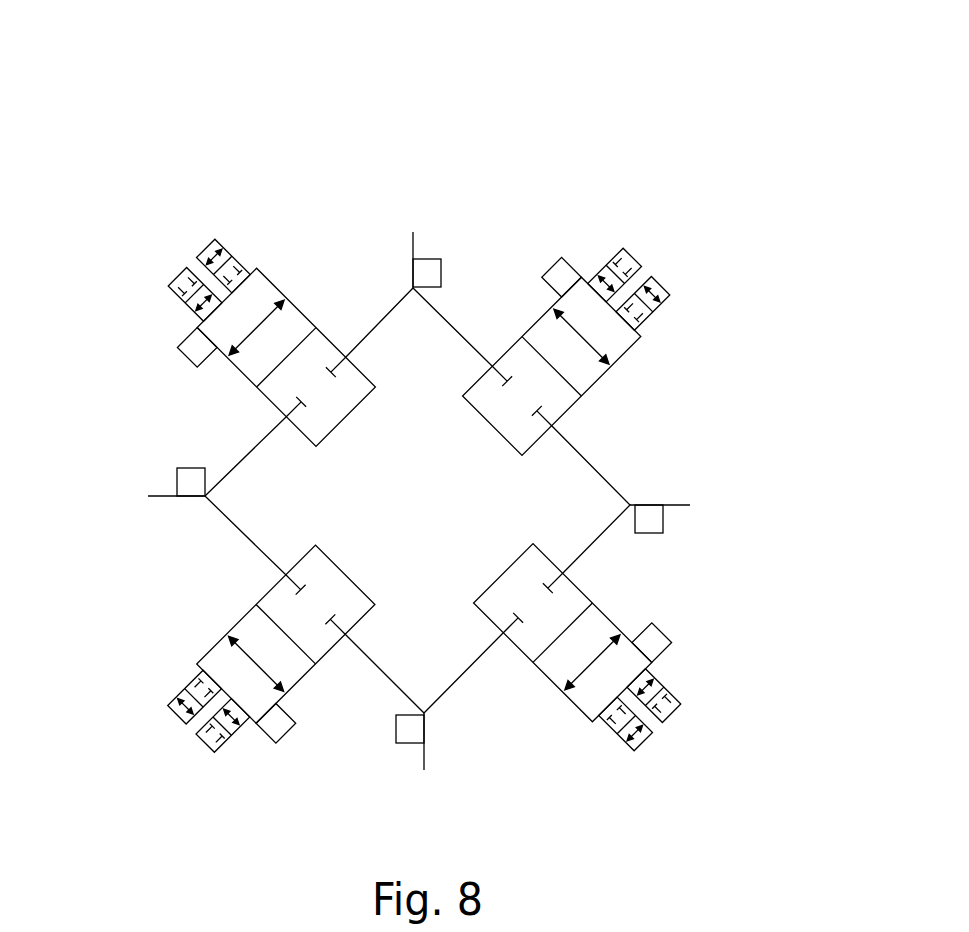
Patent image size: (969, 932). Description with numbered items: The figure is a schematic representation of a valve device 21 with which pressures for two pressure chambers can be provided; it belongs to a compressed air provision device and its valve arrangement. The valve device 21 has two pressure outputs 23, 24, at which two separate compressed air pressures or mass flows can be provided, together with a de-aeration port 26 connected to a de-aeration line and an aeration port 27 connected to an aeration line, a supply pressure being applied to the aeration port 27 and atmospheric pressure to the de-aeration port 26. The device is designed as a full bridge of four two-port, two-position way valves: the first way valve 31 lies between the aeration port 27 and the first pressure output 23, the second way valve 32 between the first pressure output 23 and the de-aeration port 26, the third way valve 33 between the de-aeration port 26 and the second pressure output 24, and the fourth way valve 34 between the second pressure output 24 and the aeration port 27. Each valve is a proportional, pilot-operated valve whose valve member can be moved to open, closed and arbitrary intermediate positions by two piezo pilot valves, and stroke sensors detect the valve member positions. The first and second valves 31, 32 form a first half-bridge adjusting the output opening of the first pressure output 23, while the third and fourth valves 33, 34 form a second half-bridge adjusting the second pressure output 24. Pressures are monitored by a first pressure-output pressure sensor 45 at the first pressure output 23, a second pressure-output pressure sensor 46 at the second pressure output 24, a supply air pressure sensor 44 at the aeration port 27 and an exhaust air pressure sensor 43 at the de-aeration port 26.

The valve device 21 is at (103, 80).
The first pressure output 23 is at (677, 507).
The second pressure output 24 is at (159, 497).
The de-aeration port 26 is at (419, 756).
The aeration port 27 is at (414, 246).
The first 2/2-way valve 31 is at (630, 366).
The second 2/2-way valve 32 is at (563, 653).
The third 2/2-way valve 33 is at (228, 634).
The fourth 2/2-way valve 34 is at (286, 329).
The exhaust air pressure sensor 43 is at (371, 755).
The supply air pressure sensor 44 is at (482, 254).
The first pressure-output pressure sensor 45 is at (685, 542).
The second pressure-output pressure sensor 46 is at (166, 456).